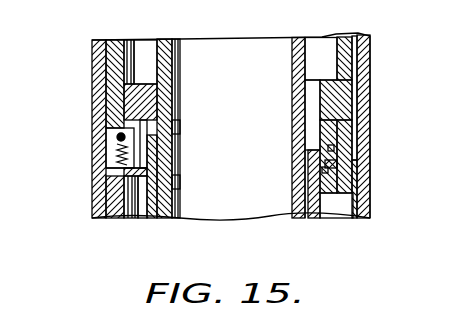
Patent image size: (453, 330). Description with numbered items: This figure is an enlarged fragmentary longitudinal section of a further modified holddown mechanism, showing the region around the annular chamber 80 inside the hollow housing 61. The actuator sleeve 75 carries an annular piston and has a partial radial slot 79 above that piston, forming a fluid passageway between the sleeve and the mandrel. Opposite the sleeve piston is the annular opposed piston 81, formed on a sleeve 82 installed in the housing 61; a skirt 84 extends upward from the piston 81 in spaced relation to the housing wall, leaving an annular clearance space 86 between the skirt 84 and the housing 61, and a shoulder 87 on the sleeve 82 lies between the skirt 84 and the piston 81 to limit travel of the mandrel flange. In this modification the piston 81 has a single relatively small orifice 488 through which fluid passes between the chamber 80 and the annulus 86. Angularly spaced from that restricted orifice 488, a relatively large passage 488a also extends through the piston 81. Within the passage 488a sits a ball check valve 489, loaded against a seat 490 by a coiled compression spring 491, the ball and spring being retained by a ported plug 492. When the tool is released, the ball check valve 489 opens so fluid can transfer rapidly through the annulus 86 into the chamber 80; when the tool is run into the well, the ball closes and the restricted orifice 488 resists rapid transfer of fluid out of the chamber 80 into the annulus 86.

The housing 61 is at (362, 64).
The actuator sleeve 75 is at (152, 219).
The radial slot 79 is at (296, 219).
The annular chamber 80 is at (336, 205).
The annular opposed piston 81 is at (340, 185).
The sleeve 82 is at (330, 94).
The skirt 84 is at (302, 62).
The annular clearance space 86 is at (360, 100).
The shoulder 87 is at (125, 73).
The orifice 488 is at (345, 161).
The passage 488a is at (110, 168).
The ball check valve 489 is at (112, 143).
The seat 490 is at (181, 127).
The coiled compression spring 491 is at (181, 162).
The ported plug 492 is at (181, 182).